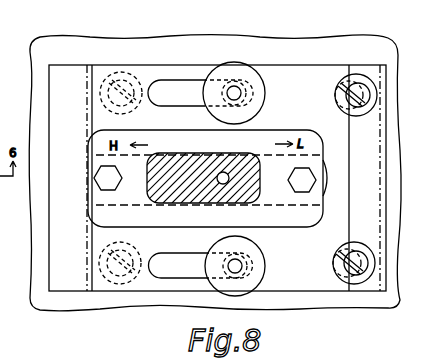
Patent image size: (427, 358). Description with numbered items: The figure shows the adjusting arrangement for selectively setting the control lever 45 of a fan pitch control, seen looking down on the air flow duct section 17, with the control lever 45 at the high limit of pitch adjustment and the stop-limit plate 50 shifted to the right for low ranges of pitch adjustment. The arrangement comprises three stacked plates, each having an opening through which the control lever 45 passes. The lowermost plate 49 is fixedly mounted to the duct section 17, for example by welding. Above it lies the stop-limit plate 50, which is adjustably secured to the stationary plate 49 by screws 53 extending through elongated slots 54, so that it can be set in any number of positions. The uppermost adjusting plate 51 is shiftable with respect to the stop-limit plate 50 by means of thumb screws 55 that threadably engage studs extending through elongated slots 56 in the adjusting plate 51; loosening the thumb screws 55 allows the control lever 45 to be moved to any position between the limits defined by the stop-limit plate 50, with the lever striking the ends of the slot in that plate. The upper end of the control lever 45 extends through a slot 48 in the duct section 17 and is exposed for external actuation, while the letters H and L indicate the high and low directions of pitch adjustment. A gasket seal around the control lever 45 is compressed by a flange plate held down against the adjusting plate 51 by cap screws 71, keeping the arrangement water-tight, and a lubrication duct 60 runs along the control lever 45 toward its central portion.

The air flow duct section 17 is at (305, 306).
The adjusting plate 51 is at (68, 66).
The stop-limit plate 50 is at (350, 172).
The lowermost plate 49 is at (384, 304).
The elongated slots 56 is at (158, 107).
The thumb screws 55 is at (236, 68).
The elongated slots 54 is at (135, 279).
The screws 53 is at (356, 114).
The slot 48 is at (298, 207).
The control lever 45 is at (180, 200).
The lubrication duct 60 is at (226, 184).
The cap screws 71 is at (107, 191).